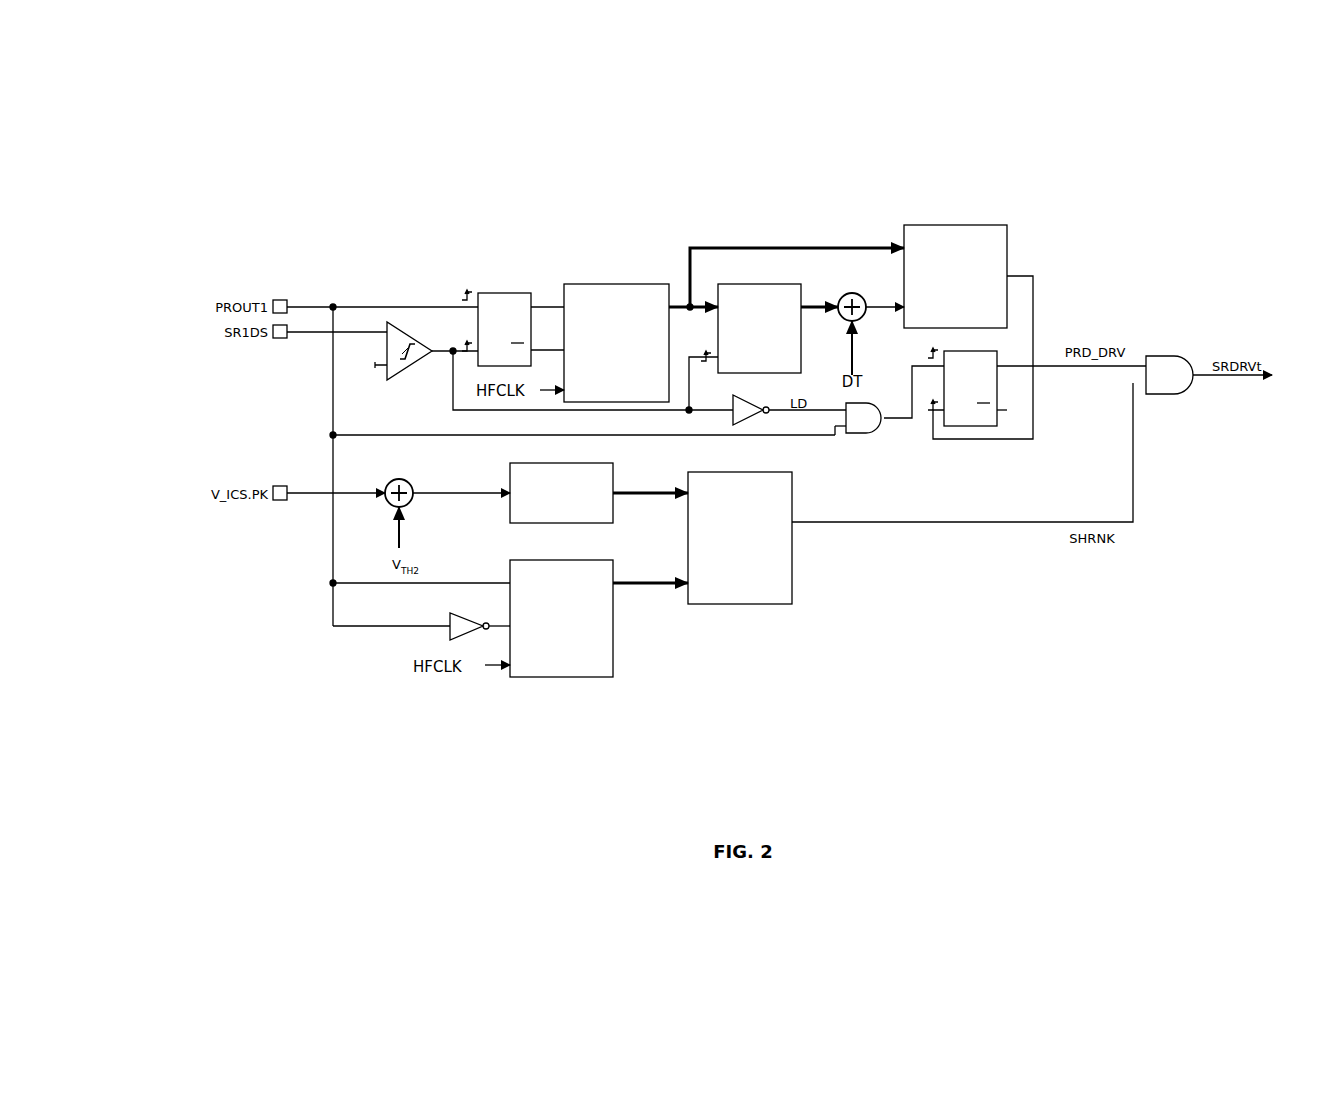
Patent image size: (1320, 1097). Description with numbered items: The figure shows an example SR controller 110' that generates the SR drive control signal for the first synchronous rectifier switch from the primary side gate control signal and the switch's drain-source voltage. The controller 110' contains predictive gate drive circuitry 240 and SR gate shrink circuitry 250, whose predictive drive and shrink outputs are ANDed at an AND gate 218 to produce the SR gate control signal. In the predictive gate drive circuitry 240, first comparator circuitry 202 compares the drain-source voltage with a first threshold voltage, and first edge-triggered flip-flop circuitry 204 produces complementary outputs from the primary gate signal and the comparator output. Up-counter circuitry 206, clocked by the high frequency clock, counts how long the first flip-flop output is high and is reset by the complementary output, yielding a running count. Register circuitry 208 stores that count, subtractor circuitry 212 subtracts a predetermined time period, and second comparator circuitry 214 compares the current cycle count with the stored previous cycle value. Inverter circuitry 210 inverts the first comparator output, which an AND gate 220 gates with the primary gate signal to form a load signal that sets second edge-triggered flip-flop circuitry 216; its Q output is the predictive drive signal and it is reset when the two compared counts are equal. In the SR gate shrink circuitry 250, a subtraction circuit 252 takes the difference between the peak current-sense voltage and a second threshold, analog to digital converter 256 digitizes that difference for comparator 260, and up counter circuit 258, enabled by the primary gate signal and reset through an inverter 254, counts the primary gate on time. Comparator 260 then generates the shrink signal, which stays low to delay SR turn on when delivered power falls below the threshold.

The SR controller 110' is at (703, 57).
The first comparator circuitry 202 is at (386, 359).
The first edge-triggered flip-flop circuitry 204 is at (499, 315).
The up-counter circuitry 206 is at (616, 332).
The register circuitry 208 is at (751, 317).
The inverter circuitry 210 is at (753, 407).
The subtractor circuitry 212 is at (846, 306).
The second comparator circuitry 214 is at (955, 266).
The second edge-triggered flip-flop circuitry 216 is at (967, 378).
The AND gate 218 is at (1169, 375).
The AND gate 220 is at (863, 418).
The predictive gate drive circuitry 240 is at (1091, 223).
The SR gate shrink circuitry 250 is at (989, 580).
The subtraction circuit 252 is at (390, 492).
The inverter 254 is at (469, 618).
The analog to digital converter 256 is at (561, 484).
The up counter circuit 258 is at (561, 608).
The comparator 260 is at (740, 530).